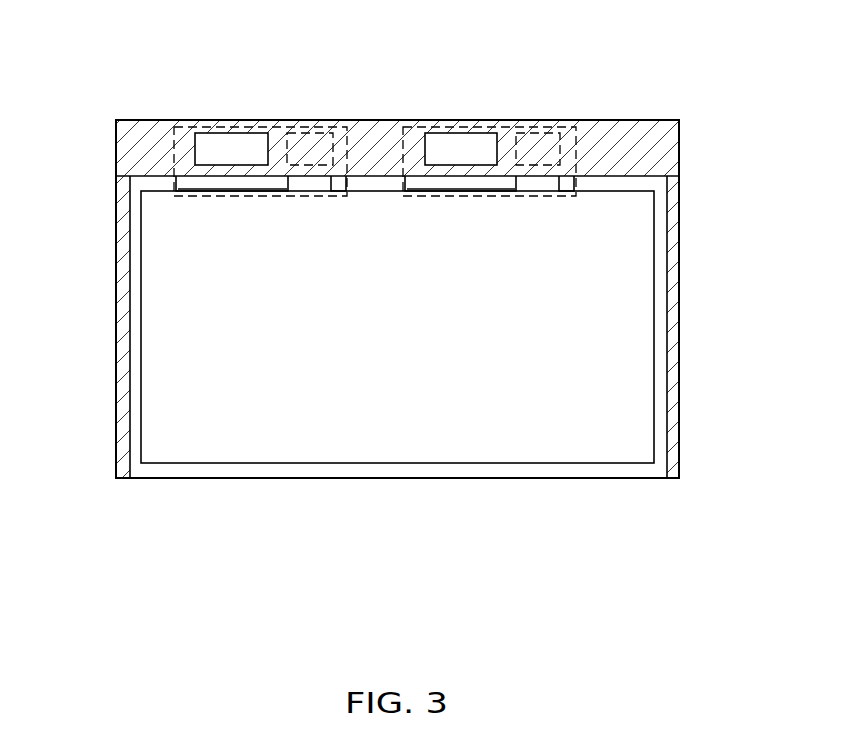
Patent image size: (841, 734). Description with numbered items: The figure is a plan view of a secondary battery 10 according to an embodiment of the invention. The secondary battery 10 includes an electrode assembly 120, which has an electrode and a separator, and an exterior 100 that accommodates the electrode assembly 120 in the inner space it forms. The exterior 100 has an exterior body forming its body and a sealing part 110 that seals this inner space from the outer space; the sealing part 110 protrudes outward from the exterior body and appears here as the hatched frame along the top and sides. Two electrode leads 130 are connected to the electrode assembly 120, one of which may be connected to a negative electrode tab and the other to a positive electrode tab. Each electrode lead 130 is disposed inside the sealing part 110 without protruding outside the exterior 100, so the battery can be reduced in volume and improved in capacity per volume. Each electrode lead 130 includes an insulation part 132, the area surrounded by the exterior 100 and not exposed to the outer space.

The secondary battery 10 is at (308, 496).
The exterior 100 is at (118, 290).
The sealing part 110 is at (662, 148).
The electrode assembly 120 is at (478, 442).
The electrode lead 130 is at (255, 98).
The insulation part 132 is at (352, 130).